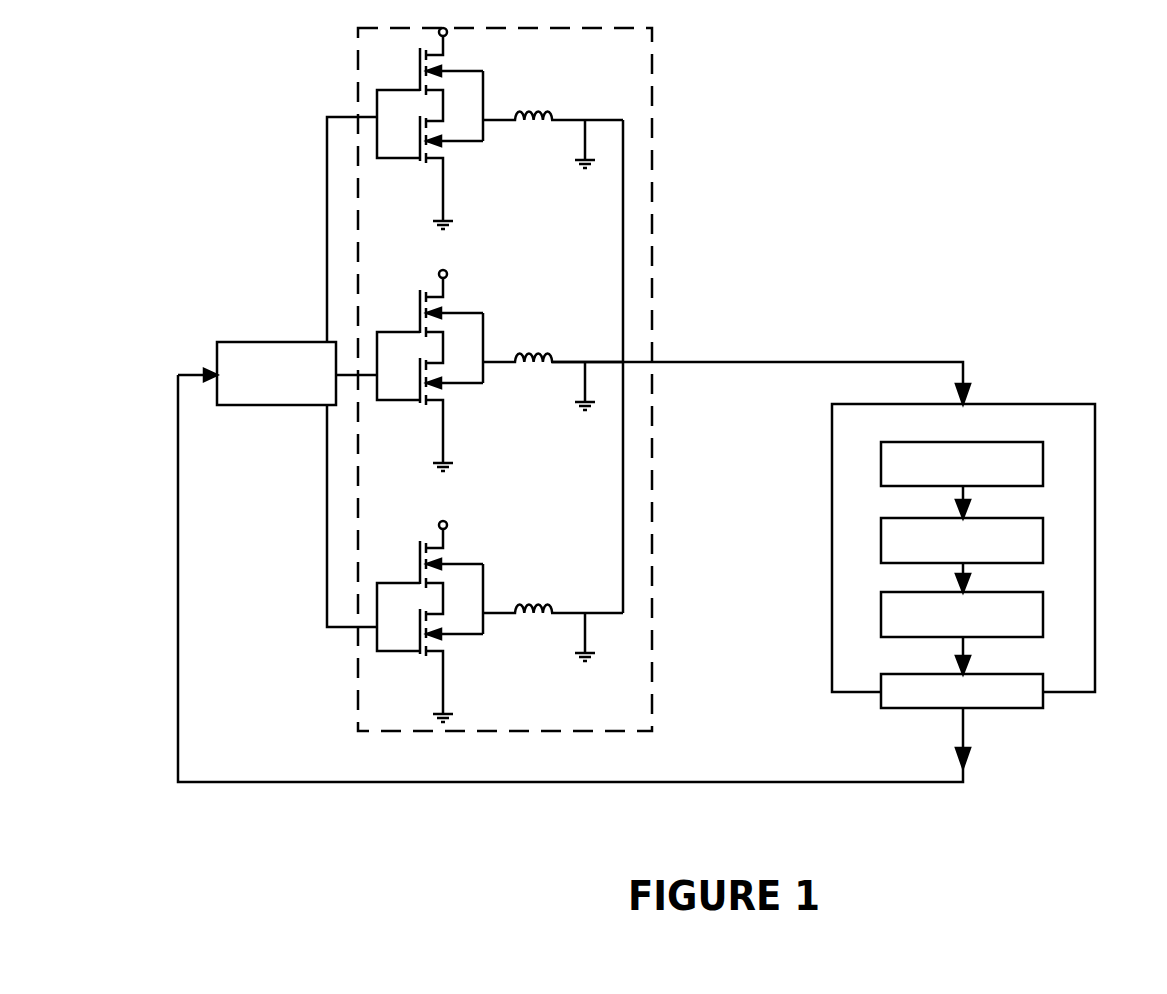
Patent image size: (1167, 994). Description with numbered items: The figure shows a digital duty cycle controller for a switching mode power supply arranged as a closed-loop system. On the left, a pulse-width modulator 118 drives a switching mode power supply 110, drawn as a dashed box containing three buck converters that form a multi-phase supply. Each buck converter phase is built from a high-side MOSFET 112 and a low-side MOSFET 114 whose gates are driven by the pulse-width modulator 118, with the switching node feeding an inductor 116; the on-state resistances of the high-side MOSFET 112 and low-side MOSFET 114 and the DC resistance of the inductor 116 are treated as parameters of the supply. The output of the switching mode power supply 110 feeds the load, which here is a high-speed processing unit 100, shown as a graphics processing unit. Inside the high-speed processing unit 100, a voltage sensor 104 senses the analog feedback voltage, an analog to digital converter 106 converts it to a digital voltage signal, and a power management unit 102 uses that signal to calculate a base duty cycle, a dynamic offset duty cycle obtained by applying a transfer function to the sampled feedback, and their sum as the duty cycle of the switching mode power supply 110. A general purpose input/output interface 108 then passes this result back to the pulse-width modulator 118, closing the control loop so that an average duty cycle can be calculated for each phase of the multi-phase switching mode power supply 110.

The high-speed processing unit 100 is at (995, 404).
The power management unit 102 is at (1043, 592).
The voltage sensor 104 is at (1043, 442).
The analog to digital converter 106 is at (1043, 518).
The general purpose input/output interface 108 is at (1043, 674).
The switching mode power supply 110 is at (653, 85).
The high-side MOSFET 112 is at (441, 313).
The low-side MOSFET 114 is at (440, 384).
The inductor 116 is at (541, 350).
The pulse-width modulator 118 is at (240, 342).